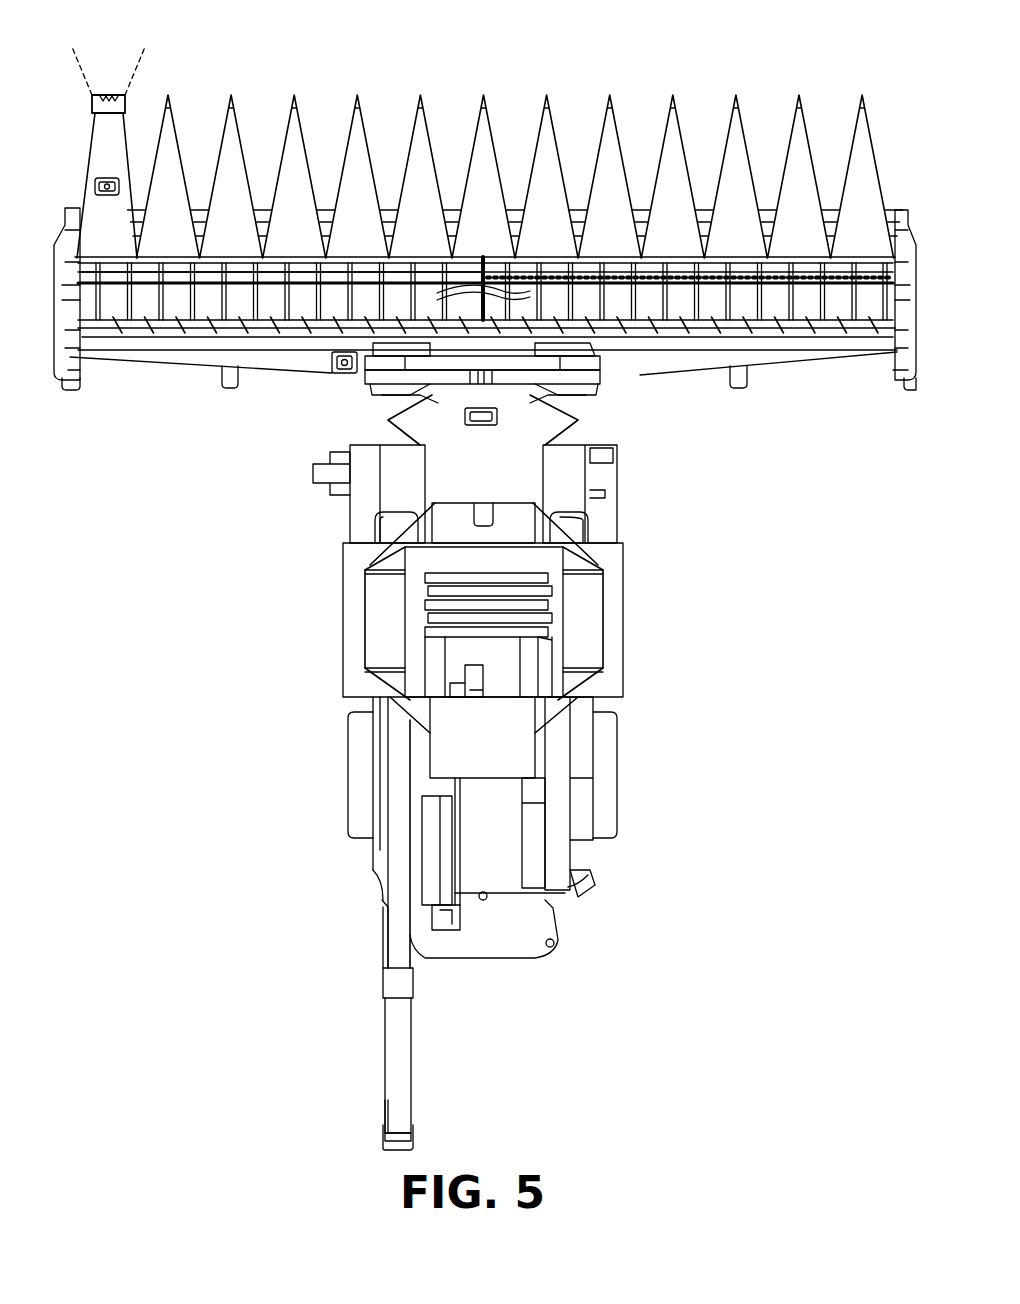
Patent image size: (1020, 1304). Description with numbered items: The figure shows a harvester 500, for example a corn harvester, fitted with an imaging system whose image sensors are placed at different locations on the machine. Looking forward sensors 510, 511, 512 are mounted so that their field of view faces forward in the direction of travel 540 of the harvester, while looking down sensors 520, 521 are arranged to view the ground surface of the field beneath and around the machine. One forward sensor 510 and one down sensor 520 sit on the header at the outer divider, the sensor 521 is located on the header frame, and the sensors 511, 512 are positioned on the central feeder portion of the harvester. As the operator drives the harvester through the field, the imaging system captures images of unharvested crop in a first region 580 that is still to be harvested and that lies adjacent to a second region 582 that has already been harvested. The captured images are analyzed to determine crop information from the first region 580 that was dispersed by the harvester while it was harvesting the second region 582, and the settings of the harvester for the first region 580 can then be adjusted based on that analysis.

The harvester 500 is at (262, 30).
The looking forward sensor 510 is at (92, 108).
The looking down sensor 520 is at (93, 188).
The looking down sensor 521 is at (345, 374).
The looking forward sensor 511 is at (500, 414).
The looking forward sensor 512 is at (617, 458).
The direction of travel 540 is at (262, 664).
The first region 580 is at (474, 109).
The second region 582 is at (919, 109).